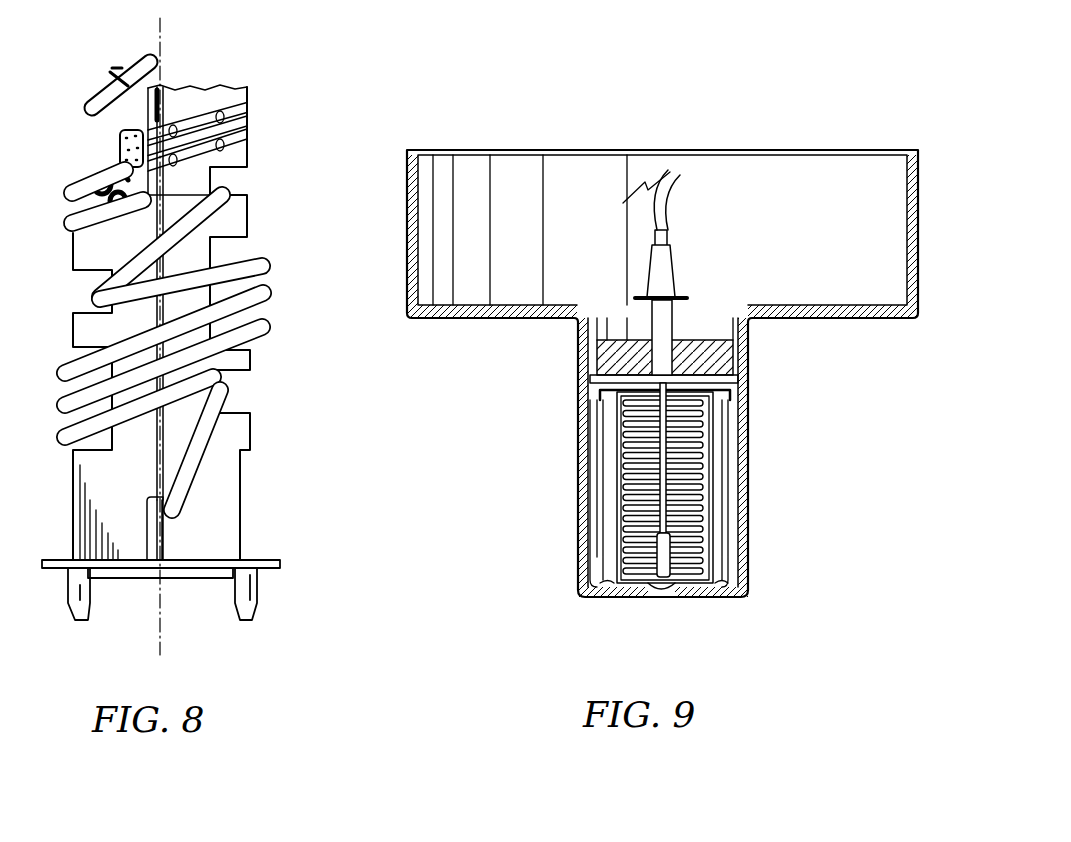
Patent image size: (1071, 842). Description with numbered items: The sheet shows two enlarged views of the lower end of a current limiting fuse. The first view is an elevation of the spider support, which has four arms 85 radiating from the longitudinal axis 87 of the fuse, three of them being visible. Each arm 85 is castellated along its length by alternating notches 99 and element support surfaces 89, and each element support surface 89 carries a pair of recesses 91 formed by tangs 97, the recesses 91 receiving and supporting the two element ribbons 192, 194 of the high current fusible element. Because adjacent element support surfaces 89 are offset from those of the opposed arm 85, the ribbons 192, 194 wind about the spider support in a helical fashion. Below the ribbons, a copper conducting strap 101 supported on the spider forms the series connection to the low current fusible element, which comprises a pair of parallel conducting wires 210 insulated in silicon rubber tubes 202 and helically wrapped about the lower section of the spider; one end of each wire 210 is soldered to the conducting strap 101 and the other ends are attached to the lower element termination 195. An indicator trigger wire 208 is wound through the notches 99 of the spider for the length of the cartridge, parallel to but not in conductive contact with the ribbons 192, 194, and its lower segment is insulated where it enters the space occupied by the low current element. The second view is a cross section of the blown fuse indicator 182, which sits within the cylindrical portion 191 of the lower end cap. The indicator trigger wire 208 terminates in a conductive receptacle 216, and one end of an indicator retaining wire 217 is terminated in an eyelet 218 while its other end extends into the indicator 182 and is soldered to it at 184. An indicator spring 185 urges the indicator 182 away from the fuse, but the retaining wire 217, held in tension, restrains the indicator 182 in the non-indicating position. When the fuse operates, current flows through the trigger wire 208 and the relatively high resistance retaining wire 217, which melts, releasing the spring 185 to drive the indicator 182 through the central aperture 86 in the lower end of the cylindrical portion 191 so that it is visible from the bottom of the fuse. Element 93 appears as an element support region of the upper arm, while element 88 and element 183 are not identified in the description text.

In FIG. 8, the arm 85 is at (237, 227).
In FIG. 8, the longitudinal axis 87 is at (161, 640).
In FIG. 8, the element support surface 89 is at (228, 90).
In FIG. 8, the recess 91 is at (250, 145).
In FIG. 8, the terminal block top 93 is at (211, 107).
In FIG. 8, the tang 97 is at (248, 122).
In FIG. 8, the notch 99 is at (140, 125).
In FIG. 8, the conducting strap 101 is at (117, 130).
In FIG. 8, the element ribbon 192 is at (248, 98).
In FIG. 8, the element ribbon 194 is at (248, 143).
In FIG. 8, the lower element termination 195 is at (270, 560).
In FIG. 8, the silicon rubber tube 202 is at (268, 295).
In FIG. 8, the indicator trigger wire 208 is at (137, 67).
In FIG. 9, the indicator trigger wire 208 is at (665, 240).
In FIG. 8, the conducting wire 210 is at (100, 170).
In FIG. 9, the blown fuse indicator 182 is at (707, 452).
In FIG. 9, the insulating plug 183 is at (737, 348).
In FIG. 9, the solder connection 184 is at (690, 560).
In FIG. 9, the indicator spring 185 is at (700, 433).
In FIG. 9, the cylindrical portion 191 is at (747, 503).
In FIG. 9, the conductive receptacle 216 is at (665, 268).
In FIG. 9, the indicator retaining wire 217 is at (640, 483).
In FIG. 9, the eyelet 218 is at (663, 322).
In FIG. 9, the central aperture 86 is at (610, 595).
In FIG. 9, the right housing foot 88 is at (712, 592).